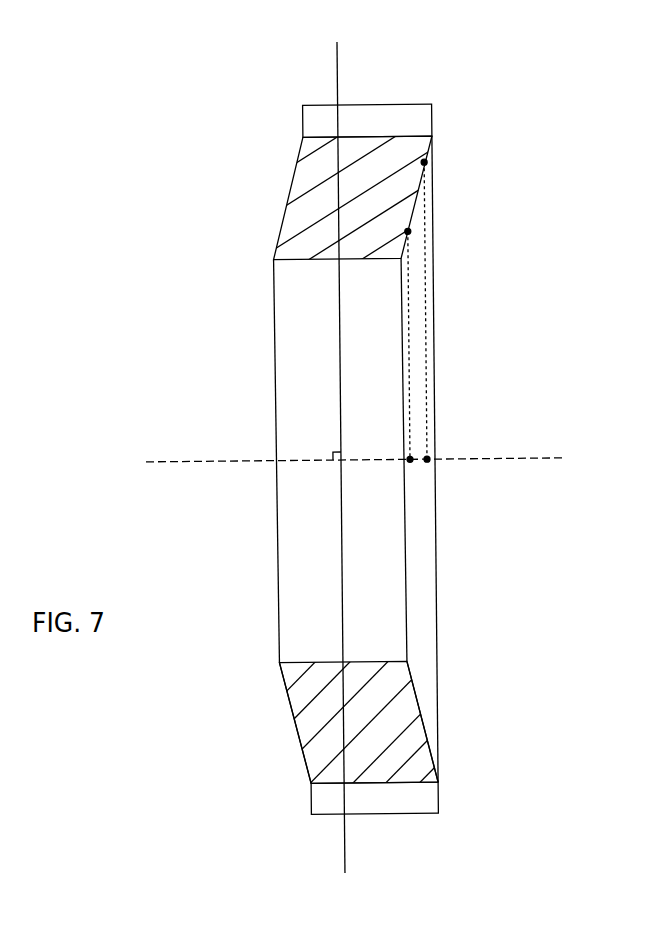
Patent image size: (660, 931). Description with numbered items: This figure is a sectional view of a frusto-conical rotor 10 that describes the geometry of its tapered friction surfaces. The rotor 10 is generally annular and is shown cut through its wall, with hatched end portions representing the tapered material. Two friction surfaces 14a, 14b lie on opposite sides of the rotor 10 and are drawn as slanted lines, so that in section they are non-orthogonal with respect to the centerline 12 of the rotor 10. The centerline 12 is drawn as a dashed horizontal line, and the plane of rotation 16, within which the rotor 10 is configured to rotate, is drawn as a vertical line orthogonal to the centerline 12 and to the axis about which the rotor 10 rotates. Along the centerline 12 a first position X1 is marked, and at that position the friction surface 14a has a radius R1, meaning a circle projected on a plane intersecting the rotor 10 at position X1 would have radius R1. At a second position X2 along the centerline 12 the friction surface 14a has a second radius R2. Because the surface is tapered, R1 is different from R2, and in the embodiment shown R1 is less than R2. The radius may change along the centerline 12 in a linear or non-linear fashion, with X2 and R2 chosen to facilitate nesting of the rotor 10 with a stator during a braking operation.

The rotor 10 is at (511, 95).
The centerline 12 is at (513, 458).
The friction surface 14a is at (422, 727).
The friction surface 14b is at (294, 726).
The plane of rotation 16 is at (346, 850).
The radius R1 is at (408, 372).
The second radius R2 is at (425, 331).
The position X1 is at (410, 463).
The second position X2 is at (428, 463).